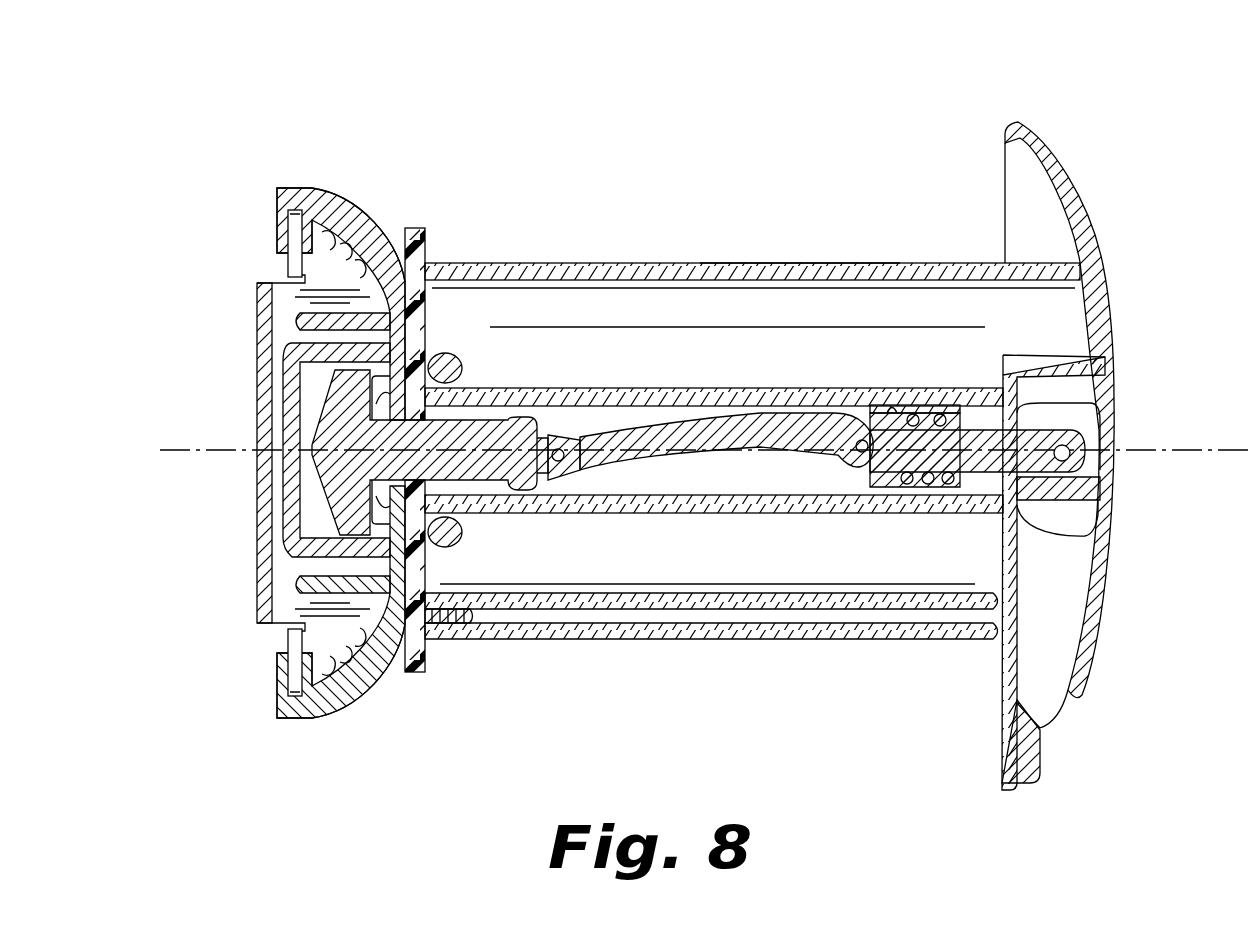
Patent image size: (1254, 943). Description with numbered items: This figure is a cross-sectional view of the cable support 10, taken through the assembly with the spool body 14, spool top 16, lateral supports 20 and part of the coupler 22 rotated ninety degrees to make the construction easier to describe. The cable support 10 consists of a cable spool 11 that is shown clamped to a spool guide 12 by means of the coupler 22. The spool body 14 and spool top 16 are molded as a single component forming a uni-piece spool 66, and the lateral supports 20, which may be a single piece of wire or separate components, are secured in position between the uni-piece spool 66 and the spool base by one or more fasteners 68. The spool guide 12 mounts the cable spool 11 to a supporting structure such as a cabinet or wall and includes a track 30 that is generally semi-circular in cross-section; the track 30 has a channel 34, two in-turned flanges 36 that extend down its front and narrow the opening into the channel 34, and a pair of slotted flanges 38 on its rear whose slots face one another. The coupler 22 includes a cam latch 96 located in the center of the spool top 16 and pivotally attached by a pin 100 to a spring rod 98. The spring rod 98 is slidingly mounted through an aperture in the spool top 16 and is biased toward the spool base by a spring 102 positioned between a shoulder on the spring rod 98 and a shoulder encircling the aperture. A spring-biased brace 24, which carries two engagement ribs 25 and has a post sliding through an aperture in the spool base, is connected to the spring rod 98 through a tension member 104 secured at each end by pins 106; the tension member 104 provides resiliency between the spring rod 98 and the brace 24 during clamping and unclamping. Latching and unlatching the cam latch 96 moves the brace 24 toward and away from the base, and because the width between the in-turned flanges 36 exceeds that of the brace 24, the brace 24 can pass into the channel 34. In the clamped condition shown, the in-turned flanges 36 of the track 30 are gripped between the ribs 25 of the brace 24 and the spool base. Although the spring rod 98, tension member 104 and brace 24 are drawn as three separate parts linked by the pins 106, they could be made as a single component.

The cable support 10 is at (918, 82).
The cable spool 11 is at (752, 170).
The spool guide 12 is at (397, 152).
The spool body 14 is at (603, 262).
The spool top 16 is at (1085, 203).
The lateral supports 20 is at (458, 372).
The coupler 22 is at (742, 405).
The brace 24 is at (308, 478).
The engagement ribs 25 is at (428, 332).
The track 30 is at (362, 710).
The channel 34 is at (257, 345).
The in-turned flanges 36 is at (376, 380).
The slotted flanges 38 is at (282, 236).
The uni-piece spool 66 is at (822, 262).
The fasteners 68 is at (470, 628).
The cam latch 96 is at (1113, 573).
The spring rod 98 is at (985, 440).
The pin 100 is at (1072, 445).
The spring 102 is at (935, 490).
The tension member 104 is at (640, 428).
The pins 106 is at (860, 420).